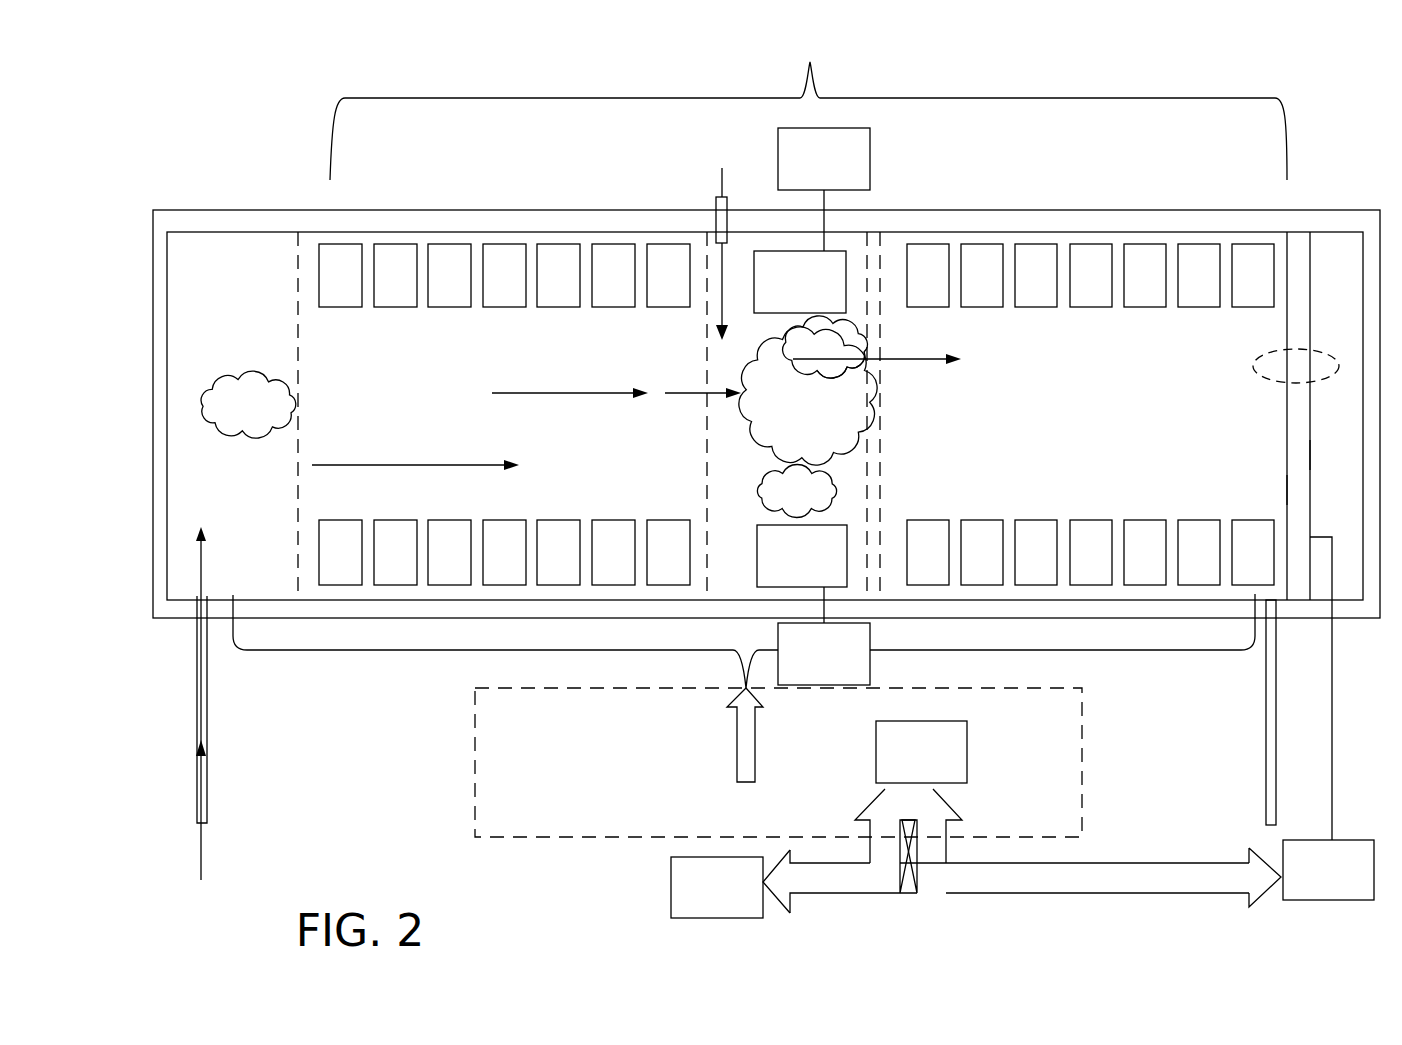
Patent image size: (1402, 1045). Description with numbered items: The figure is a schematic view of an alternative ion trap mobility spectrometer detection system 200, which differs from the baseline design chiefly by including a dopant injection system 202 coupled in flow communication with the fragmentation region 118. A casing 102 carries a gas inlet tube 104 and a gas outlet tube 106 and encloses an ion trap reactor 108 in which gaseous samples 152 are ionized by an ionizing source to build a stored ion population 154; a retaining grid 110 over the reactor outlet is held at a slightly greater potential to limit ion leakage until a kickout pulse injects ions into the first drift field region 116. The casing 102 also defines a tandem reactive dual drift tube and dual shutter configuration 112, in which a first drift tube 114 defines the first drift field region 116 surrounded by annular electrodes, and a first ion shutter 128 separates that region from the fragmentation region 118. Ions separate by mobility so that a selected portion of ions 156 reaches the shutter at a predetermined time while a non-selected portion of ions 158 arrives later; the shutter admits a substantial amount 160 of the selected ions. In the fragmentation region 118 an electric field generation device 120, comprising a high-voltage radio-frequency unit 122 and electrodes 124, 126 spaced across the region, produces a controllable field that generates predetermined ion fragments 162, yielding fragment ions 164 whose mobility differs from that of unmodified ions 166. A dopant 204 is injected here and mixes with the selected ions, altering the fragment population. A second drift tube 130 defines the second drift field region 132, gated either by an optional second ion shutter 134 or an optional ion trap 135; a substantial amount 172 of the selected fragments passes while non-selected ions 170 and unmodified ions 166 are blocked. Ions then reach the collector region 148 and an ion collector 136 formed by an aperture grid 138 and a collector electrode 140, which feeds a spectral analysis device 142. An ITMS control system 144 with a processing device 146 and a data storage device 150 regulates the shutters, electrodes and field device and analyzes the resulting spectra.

The ion trap mobility spectrometer detection system 200 is at (313, 176).
The casing 102 is at (243, 210).
The tandem reactive dual drift tube and dual shutter configuration 112 is at (808, 104).
The first drift tube 114 is at (530, 231).
The first drift field region 116 is at (372, 370).
The fragmentation region 118 is at (714, 475).
The electric field generation device 120 is at (784, 222).
The high-voltage radio-frequency unit 122 is at (802, 173).
The electrode 124 is at (780, 570).
The electrode 126 is at (778, 296).
The first ion shutter 128 is at (707, 362).
The second drift tube 130 is at (1040, 231).
The second drift field region 132 is at (1064, 390).
The second ion shutter 134 is at (879, 490).
The ion trap 135 is at (883, 216).
The ion collector 136 is at (1254, 366).
The aperture grid 138 is at (1285, 490).
The collector electrode 140 is at (1308, 454).
The spectral analysis device 142 is at (1306, 884).
The ITMS control system 144 is at (560, 837).
The processing device 146 is at (899, 766).
The collector region 148 is at (1328, 288).
The data storage device 150 is at (695, 902).
The gaseous samples 152 is at (203, 588).
The stored ion population 154 is at (227, 420).
The selected portion of ions 156 is at (567, 394).
The non-selected portion of ions 158 is at (420, 465).
The substantial amount of the selected portion of ions 160 is at (697, 398).
The predetermined ion fragments 162 is at (845, 353).
The first portion of predetermined ion fragments 164 is at (796, 363).
The unmodified ions 166 is at (782, 428).
The non-selected portion of ions 170 is at (776, 505).
The substantial amount of selected fragmented ions 172 is at (958, 362).
The gas inlet tube 104 is at (208, 728).
The gas outlet tube 106 is at (1267, 742).
The ion trap reactor 108 is at (201, 365).
The retaining grid 110 is at (298, 517).
The dopant injection system 202 is at (716, 182).
The dopant 204 is at (722, 293).